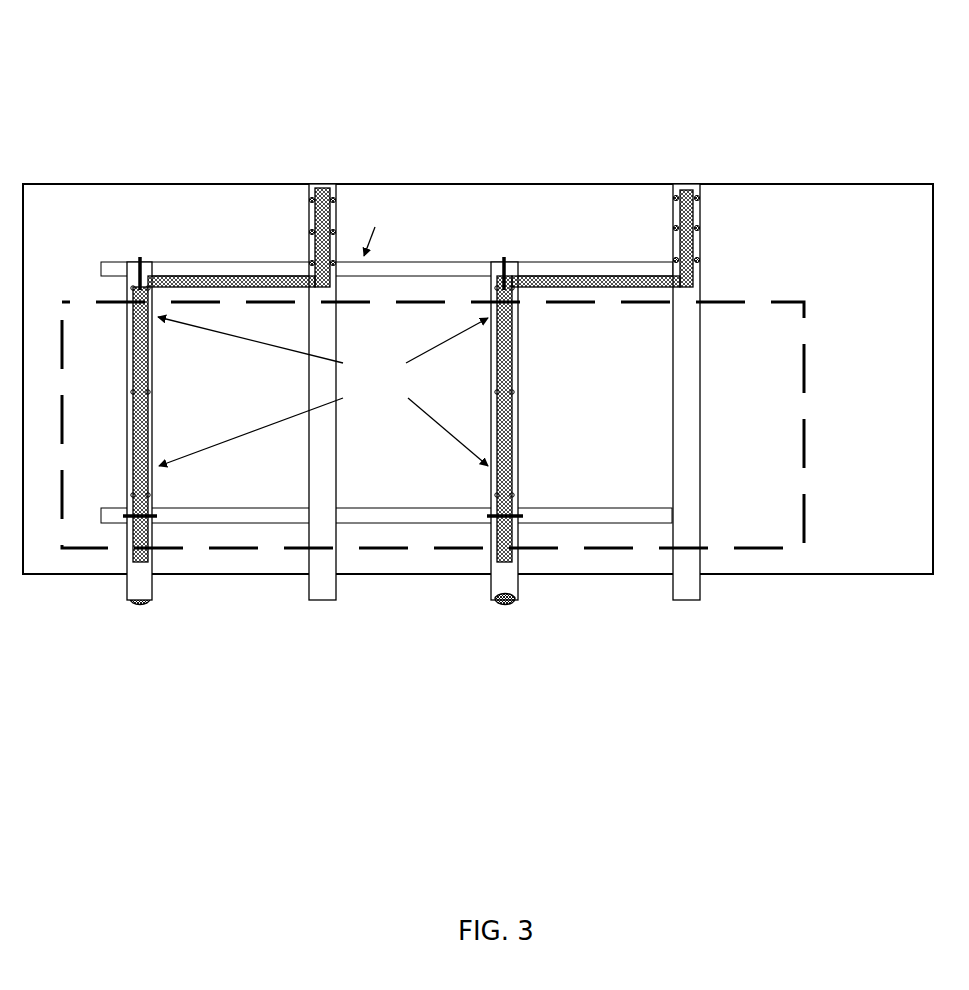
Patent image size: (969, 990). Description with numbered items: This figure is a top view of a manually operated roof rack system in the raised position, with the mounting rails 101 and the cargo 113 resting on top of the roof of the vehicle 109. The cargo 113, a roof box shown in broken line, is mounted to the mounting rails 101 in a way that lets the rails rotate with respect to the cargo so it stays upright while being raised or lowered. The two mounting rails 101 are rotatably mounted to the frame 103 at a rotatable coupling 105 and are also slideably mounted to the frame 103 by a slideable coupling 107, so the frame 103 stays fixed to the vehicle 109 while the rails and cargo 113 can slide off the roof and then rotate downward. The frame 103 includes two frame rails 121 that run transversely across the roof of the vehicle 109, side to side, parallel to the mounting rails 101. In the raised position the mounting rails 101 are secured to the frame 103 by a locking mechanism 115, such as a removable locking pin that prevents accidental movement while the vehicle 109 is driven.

The mounting rail 101 is at (215, 278).
The frame 103 is at (690, 410).
The rotatable coupling 105 is at (312, 184).
The slideable coupling 107 is at (142, 575).
The vehicle 109 is at (845, 237).
The cargo 113 is at (748, 490).
The locking mechanism 115 is at (497, 287).
The frame rail 121 is at (323, 328).